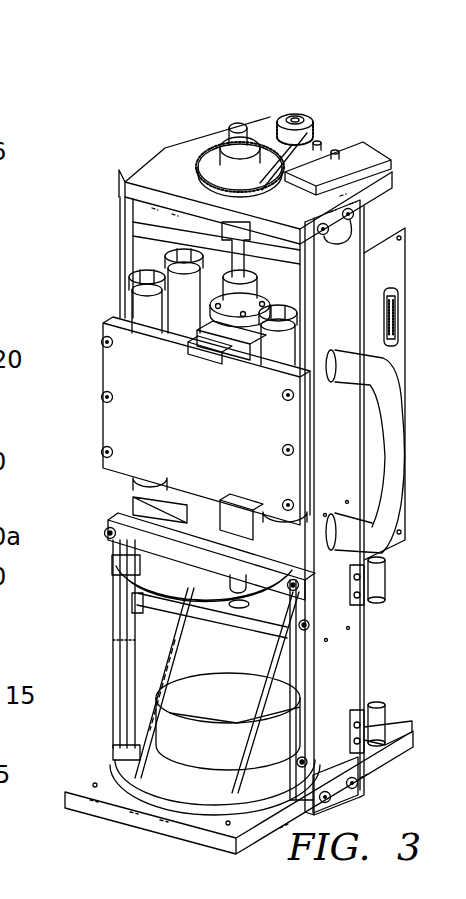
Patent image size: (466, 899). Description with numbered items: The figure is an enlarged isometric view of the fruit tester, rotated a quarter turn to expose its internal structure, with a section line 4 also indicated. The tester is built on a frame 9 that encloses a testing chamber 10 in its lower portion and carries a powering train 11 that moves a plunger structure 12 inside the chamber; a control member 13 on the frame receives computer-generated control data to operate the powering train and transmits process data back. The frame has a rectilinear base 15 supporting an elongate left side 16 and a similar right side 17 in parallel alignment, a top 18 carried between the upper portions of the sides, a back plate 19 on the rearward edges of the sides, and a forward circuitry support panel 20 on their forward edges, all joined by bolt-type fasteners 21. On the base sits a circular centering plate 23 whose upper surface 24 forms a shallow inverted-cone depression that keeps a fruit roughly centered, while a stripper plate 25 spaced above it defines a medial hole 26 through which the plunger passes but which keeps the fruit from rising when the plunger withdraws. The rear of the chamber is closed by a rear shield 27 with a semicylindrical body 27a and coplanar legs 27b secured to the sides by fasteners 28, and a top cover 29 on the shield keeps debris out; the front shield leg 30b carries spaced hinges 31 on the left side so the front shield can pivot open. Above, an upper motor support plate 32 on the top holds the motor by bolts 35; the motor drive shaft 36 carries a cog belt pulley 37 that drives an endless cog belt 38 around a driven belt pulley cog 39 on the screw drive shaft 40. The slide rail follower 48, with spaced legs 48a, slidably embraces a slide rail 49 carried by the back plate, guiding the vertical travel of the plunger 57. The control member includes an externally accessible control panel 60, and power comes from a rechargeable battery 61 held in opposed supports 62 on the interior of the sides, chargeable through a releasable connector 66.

The section line 4- 4 is at (360, 67).
The frame 9 is at (84, 768).
The testing chamber 10 is at (178, 667).
The powering train 11 is at (328, 115).
The plunger structure 12 is at (216, 522).
The control member 13 is at (278, 258).
The base 15 is at (72, 787).
The left side 16 is at (353, 660).
The right side 17 is at (122, 490).
The top 18 is at (196, 148).
The back plate 19 is at (120, 425).
The forward circuitry support panel 20 is at (278, 281).
The fasteners 21 is at (326, 236).
The centering plate 23 is at (220, 788).
The upper surface 24 is at (211, 704).
The stripper plate 25 is at (264, 634).
The medial hole 26 is at (241, 606).
The rear shield 27 is at (122, 602).
The body 27a is at (113, 647).
The legs 27b is at (120, 748).
The fasteners 28 is at (118, 574).
The top cover 29 is at (147, 562).
The front shield leg 30b is at (362, 684).
The hinges 31 is at (388, 578).
The upper motor support plate 32 is at (352, 160).
The bolts 35 is at (330, 147).
The motor drive shaft 36 is at (308, 116).
The cog belt pulley 37 is at (270, 118).
The endless cog belt 38 is at (352, 180).
The driven belt pulley cog 39 is at (227, 165).
The screw drive shaft 40 is at (190, 155).
The slide rail follower 48 is at (222, 512).
The legs 48a is at (220, 357).
The slide rail 49 is at (207, 343).
The plunger 57 is at (229, 582).
The control panel 60 is at (388, 262).
The rechargeable battery 61 is at (188, 296).
The supports 62 is at (152, 275).
The releasable connector 66 is at (398, 312).